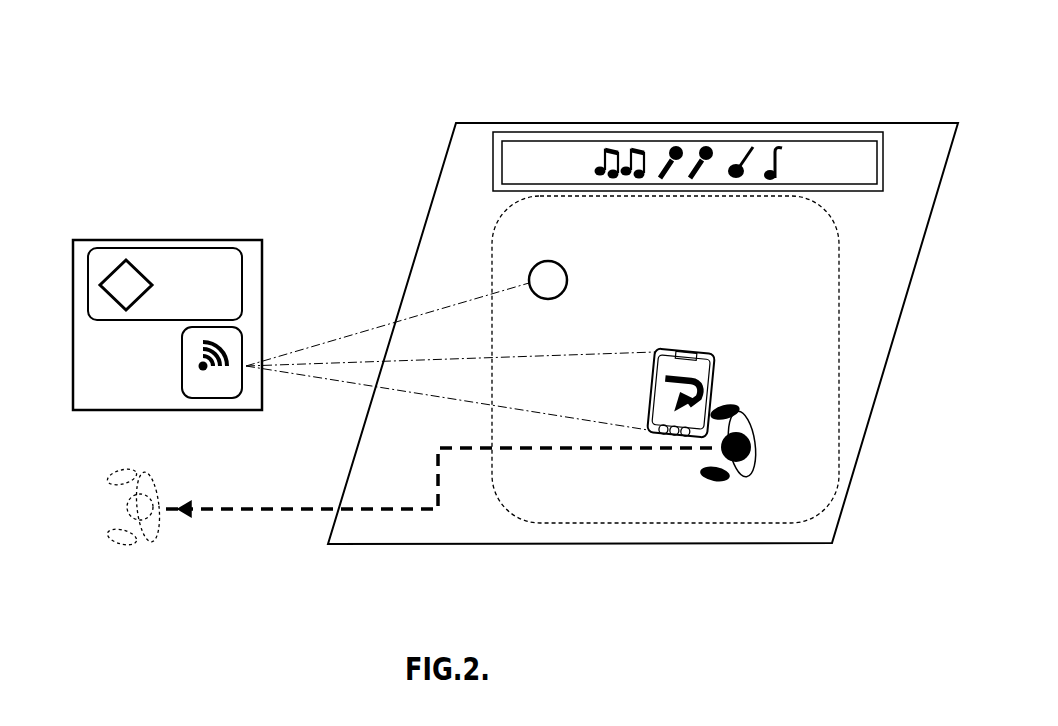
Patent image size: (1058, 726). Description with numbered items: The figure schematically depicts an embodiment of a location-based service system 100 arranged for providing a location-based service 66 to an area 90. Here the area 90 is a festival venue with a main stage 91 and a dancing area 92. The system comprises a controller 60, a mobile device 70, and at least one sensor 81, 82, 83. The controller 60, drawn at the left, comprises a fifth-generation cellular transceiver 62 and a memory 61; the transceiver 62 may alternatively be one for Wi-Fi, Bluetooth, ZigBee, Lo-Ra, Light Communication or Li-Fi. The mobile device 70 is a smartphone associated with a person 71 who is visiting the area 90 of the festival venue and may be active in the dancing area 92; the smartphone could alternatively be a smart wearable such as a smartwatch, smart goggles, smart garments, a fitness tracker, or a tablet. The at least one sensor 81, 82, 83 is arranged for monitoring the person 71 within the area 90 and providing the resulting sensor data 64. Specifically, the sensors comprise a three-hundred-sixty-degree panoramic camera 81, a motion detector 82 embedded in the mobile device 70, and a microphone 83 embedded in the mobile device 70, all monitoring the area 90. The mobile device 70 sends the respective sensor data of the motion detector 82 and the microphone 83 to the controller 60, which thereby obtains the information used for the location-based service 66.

The system 100 is at (244, 72).
The controller 60 is at (92, 232).
The memory 61 is at (137, 320).
The 5G-transceiver 62 is at (182, 345).
The sensor data 64 is at (126, 259).
The mobile device 70 is at (690, 340).
The location-based service 66 is at (696, 383).
The person 71 is at (752, 467).
The panoramic camera 81 is at (567, 281).
The motion detector 82 is at (678, 350).
The microphone 83 is at (666, 437).
The area 90 is at (862, 392).
The main stage 91 is at (492, 192).
The dancing area 92 is at (841, 238).